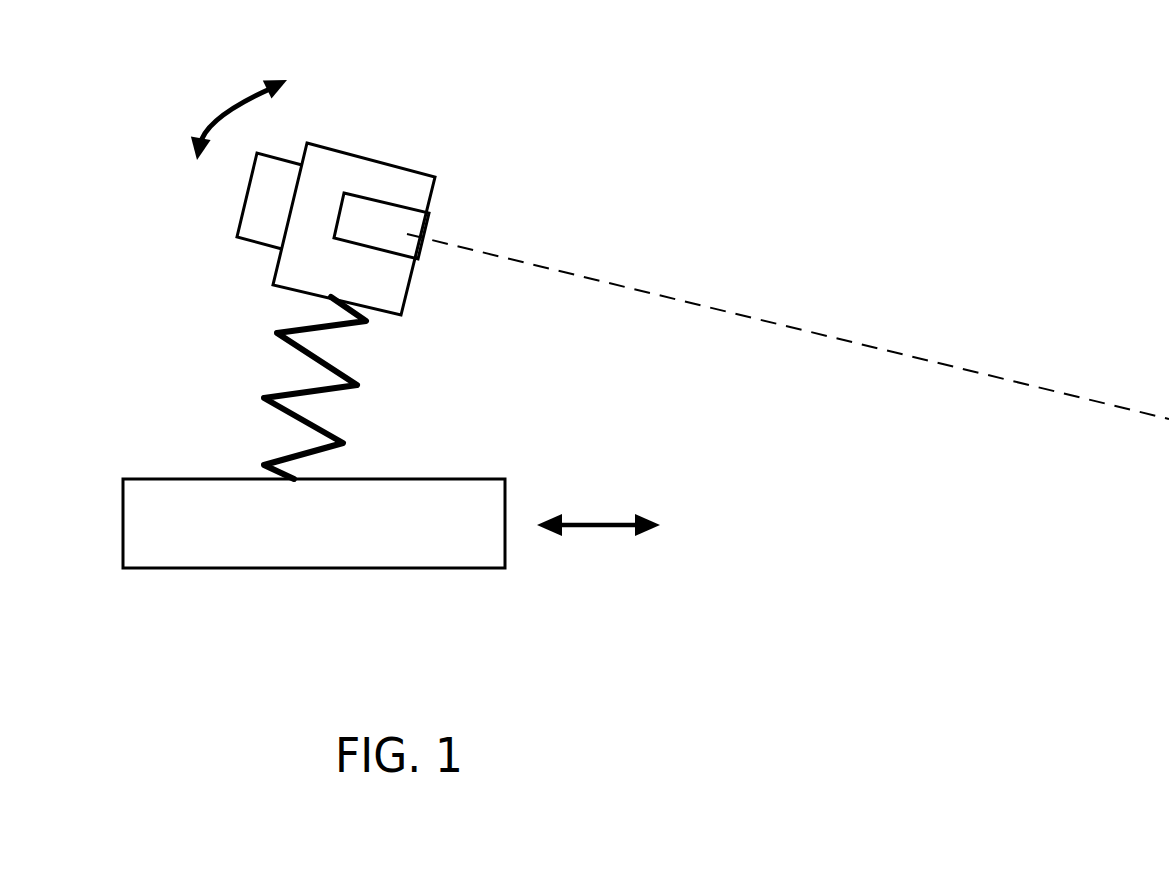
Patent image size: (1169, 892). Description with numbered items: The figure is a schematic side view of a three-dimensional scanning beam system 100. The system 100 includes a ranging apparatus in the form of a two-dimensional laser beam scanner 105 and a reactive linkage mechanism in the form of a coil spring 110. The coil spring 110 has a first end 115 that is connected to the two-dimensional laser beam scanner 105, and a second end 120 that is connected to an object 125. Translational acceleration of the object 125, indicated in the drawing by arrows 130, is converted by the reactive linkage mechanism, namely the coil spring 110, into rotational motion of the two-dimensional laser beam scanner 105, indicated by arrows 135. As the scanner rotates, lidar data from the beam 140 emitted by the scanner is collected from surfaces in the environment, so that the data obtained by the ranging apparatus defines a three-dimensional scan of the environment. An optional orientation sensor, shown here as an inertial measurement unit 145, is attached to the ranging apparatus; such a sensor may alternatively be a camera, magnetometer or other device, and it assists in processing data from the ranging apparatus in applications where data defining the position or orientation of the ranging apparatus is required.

The 3D scanning beam system 100 is at (690, 177).
The 2D laser beam scanner 105 is at (372, 157).
The coil spring 110 is at (327, 427).
The first end 115 is at (240, 300).
The second end 120 is at (232, 470).
The object 125 is at (382, 538).
The arrows 130 is at (600, 528).
The arrows 135 is at (237, 113).
The beam 140 is at (860, 345).
The inertial measurement unit (IMU) 145 is at (243, 215).